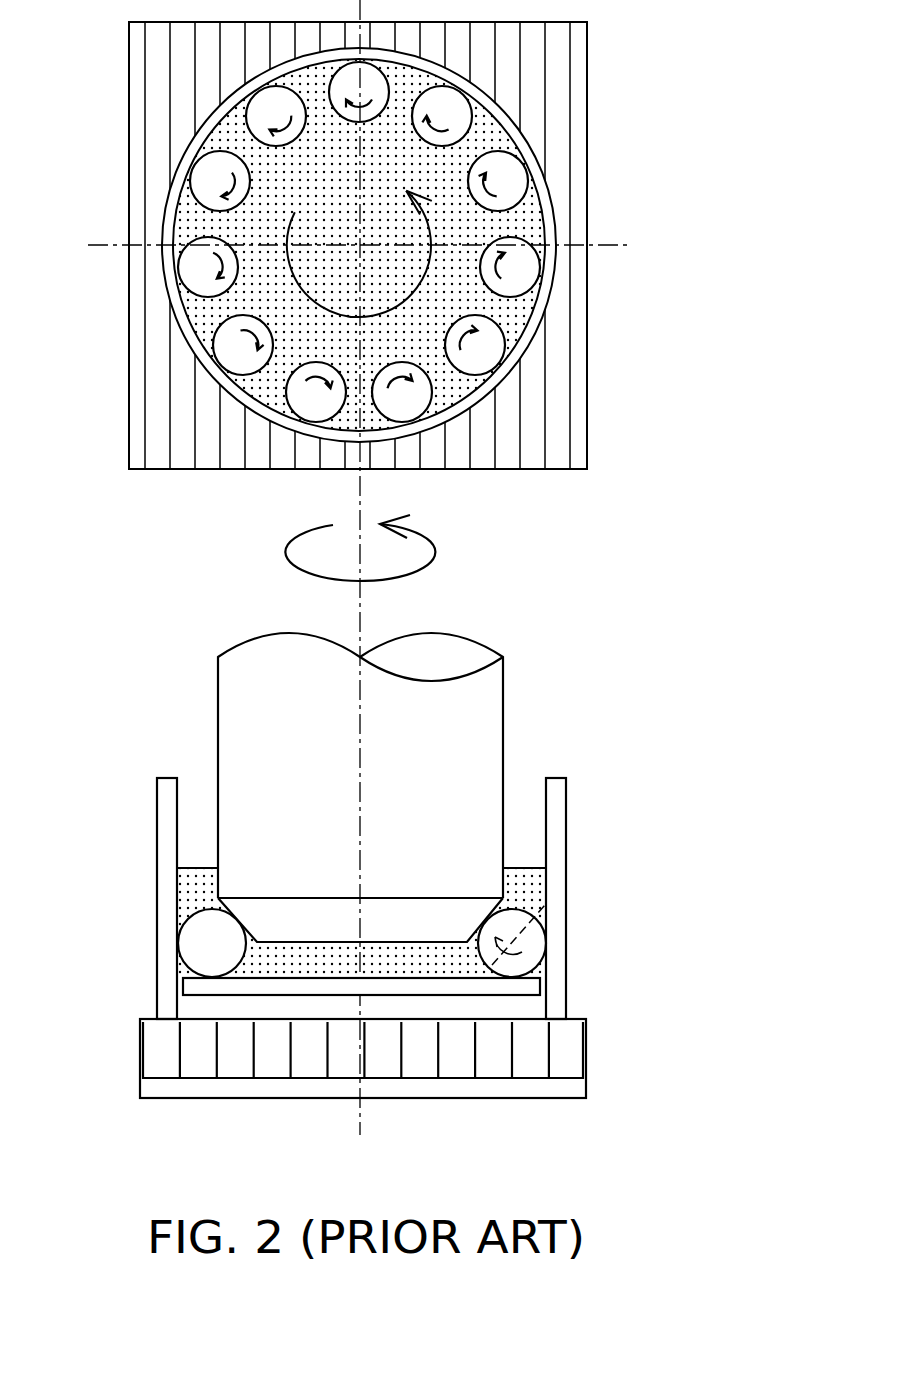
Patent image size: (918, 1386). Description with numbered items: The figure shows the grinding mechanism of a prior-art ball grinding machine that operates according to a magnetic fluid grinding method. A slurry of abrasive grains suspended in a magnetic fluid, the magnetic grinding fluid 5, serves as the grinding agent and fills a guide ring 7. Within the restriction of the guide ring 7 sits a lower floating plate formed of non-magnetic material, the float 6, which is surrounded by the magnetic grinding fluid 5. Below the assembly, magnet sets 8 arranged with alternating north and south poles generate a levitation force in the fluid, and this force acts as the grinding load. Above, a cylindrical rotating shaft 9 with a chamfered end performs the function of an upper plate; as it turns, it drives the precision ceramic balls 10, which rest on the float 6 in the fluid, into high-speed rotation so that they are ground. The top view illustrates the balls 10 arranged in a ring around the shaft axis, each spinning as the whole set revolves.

The magnetic grinding fluid 5 is at (195, 889).
The float 6 is at (532, 988).
The guide ring 7 is at (555, 828).
The magnet sets 8 is at (150, 1068).
The cylindrical rotating shaft 9 is at (483, 703).
The precision ceramic balls 10 is at (203, 947).